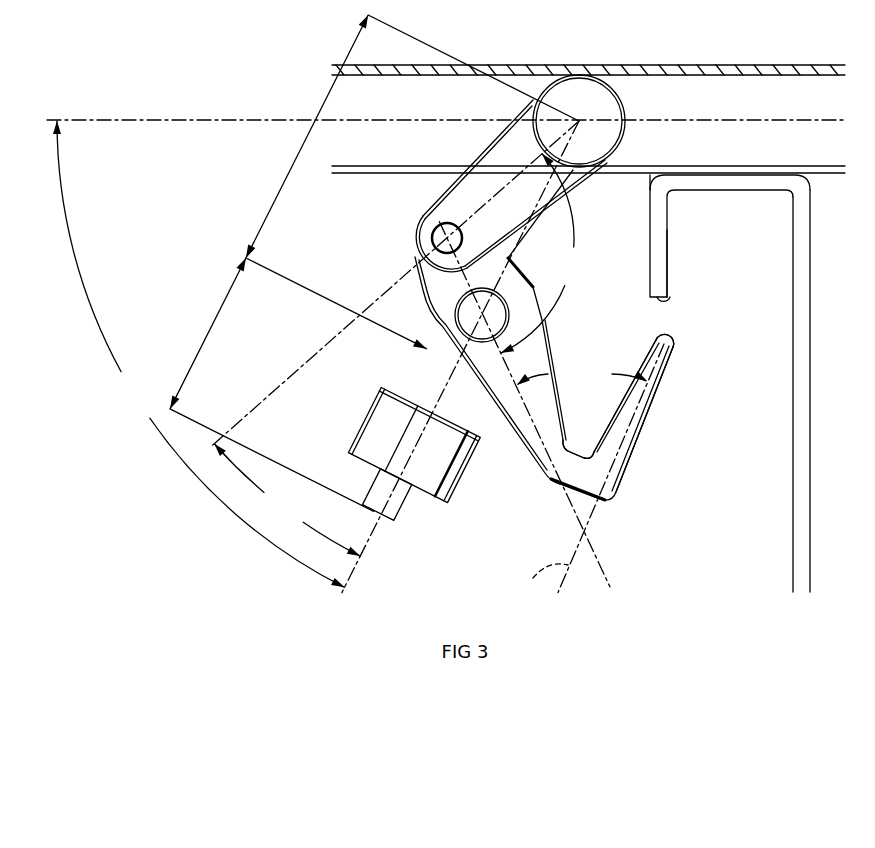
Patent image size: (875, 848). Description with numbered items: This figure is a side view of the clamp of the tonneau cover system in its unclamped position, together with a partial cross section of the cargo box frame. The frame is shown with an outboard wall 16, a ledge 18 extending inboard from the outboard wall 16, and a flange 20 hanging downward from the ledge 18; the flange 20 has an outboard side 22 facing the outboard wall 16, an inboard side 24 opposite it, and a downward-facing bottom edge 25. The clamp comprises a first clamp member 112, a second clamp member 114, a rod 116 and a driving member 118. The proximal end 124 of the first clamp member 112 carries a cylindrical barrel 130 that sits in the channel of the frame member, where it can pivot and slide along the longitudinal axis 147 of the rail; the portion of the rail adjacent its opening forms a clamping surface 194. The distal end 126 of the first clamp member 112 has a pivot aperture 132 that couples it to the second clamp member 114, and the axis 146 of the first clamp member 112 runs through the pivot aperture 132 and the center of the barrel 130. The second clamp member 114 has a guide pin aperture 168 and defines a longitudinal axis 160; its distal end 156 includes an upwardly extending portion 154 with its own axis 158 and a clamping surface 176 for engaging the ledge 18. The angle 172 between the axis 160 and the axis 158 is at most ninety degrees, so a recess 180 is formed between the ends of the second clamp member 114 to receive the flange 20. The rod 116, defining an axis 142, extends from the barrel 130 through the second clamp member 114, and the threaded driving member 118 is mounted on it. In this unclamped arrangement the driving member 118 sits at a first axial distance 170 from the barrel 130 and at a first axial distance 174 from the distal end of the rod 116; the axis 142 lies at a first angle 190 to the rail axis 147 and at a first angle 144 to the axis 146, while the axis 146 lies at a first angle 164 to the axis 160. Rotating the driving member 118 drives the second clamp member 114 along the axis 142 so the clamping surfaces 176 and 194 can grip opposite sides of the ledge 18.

The outboard wall 16 is at (806, 306).
The ledge 18 is at (760, 178).
The flange 20 is at (668, 226).
The outboard side 22 is at (668, 259).
The inboard side 24 is at (650, 236).
The bottom edge 25 is at (668, 303).
The first clamp member 112 is at (452, 201).
The second clamp member 114 is at (524, 450).
The rod 116 is at (405, 506).
The driving member 118 is at (458, 489).
The proximal end 124 is at (581, 72).
The distal end 126 is at (412, 239).
The barrel 130 is at (606, 110).
The pivot aperture 132 is at (433, 232).
The axis of the elongate member 142 is at (358, 572).
The first angle 144 is at (287, 500).
The axis of the first clamp member 146 is at (315, 357).
The longitudinal axis 147 is at (140, 121).
The upwardly extending portion 154 is at (648, 410).
The distal end 156 is at (675, 351).
The longitudinal axis 158 is at (524, 408).
The longitudinal axis of the second clamp member 160 is at (594, 562).
The first angle 164 is at (545, 253).
The guide pin aperture 168 is at (455, 318).
The first axial distance 170 is at (412, 182).
The upwardly extending angle 172 is at (582, 373).
The first axial distance 174 is at (272, 384).
The clamping surface 176 is at (666, 336).
The recess 180 is at (585, 403).
The first angle 190 is at (199, 354).
The clamping surface 194 is at (722, 165).